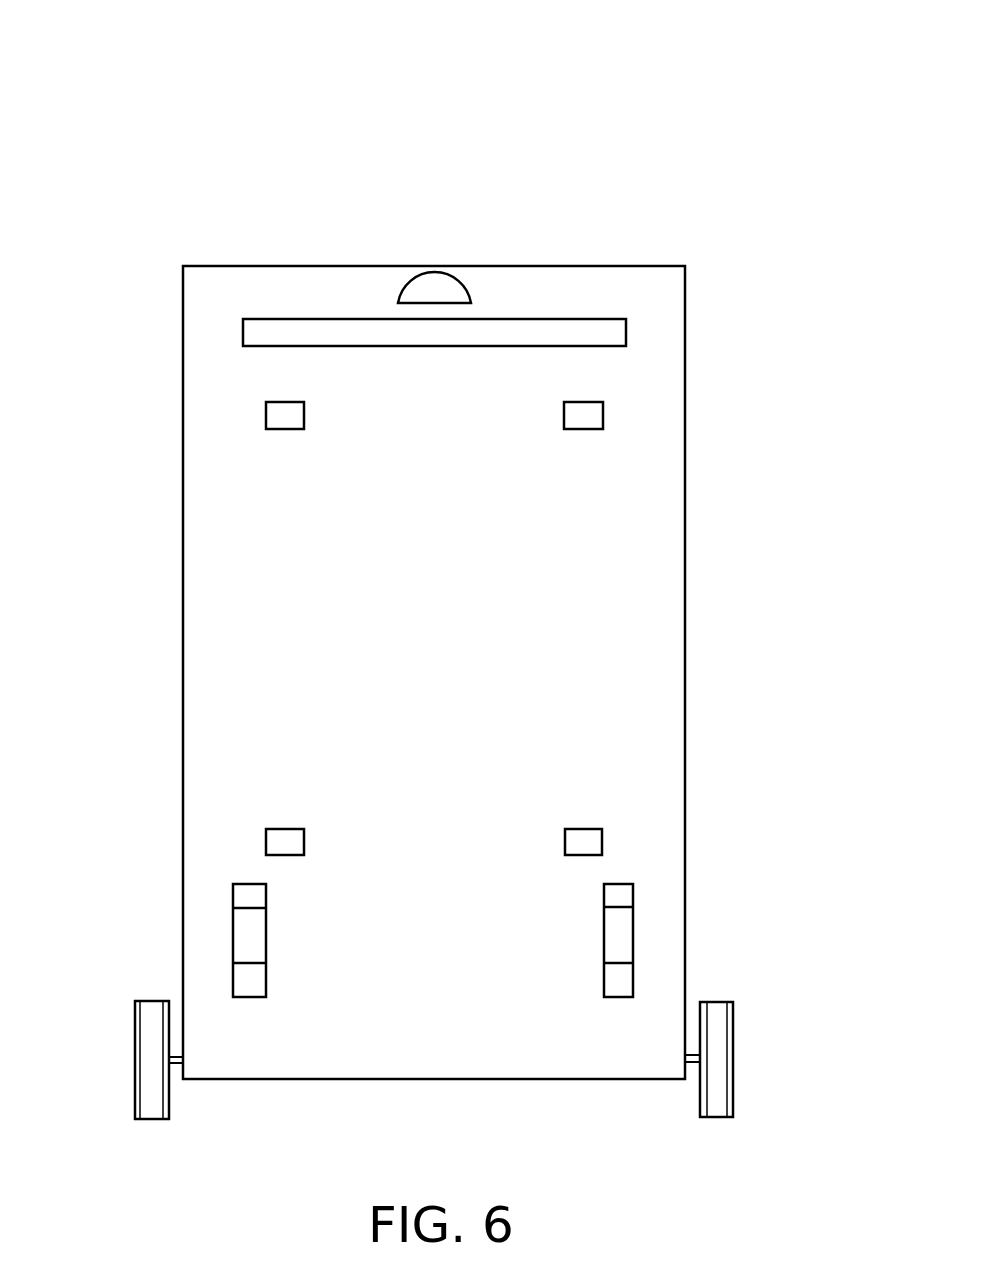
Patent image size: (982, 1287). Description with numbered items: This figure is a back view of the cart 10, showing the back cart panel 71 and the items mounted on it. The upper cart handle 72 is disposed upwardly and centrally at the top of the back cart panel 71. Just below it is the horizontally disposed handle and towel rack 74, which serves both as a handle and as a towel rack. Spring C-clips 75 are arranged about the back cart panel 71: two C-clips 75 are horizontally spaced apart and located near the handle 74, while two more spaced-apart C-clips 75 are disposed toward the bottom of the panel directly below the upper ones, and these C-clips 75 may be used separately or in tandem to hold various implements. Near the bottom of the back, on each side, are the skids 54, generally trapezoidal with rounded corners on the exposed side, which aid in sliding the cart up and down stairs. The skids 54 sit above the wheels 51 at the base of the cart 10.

The cart 10 is at (150, 145).
The wheels 51 is at (732, 1057).
The skid 54 is at (630, 918).
The back cart panel 71 is at (665, 520).
The upper cart handle 72 is at (434, 283).
The handle and towel rack 74 is at (585, 320).
The spring C-clips 75 is at (603, 410).